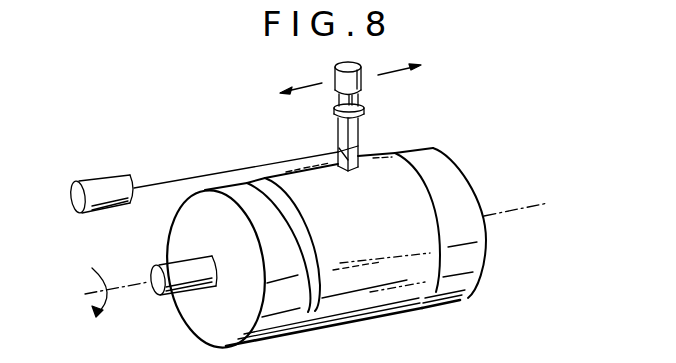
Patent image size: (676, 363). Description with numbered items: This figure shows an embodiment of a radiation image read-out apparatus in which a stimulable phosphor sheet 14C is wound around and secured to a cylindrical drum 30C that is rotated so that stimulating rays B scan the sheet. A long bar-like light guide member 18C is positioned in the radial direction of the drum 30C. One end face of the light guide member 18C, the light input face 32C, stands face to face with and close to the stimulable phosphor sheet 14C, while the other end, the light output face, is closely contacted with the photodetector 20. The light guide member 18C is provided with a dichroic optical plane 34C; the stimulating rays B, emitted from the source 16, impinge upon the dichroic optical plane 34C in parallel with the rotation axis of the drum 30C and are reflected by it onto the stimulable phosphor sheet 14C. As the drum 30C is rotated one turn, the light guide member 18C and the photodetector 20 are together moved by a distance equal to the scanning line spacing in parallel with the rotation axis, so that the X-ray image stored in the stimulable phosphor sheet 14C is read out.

The stimulable phosphor sheet 14C is at (423, 306).
The cylindrical drum 30C is at (476, 276).
The light input face 32C is at (341, 171).
The photodetector 20 is at (363, 68).
The light guide member 18C is at (337, 137).
The dichroic optical plane 34C is at (358, 148).
The light source 16 is at (112, 177).
The stimulating rays B is at (204, 176).